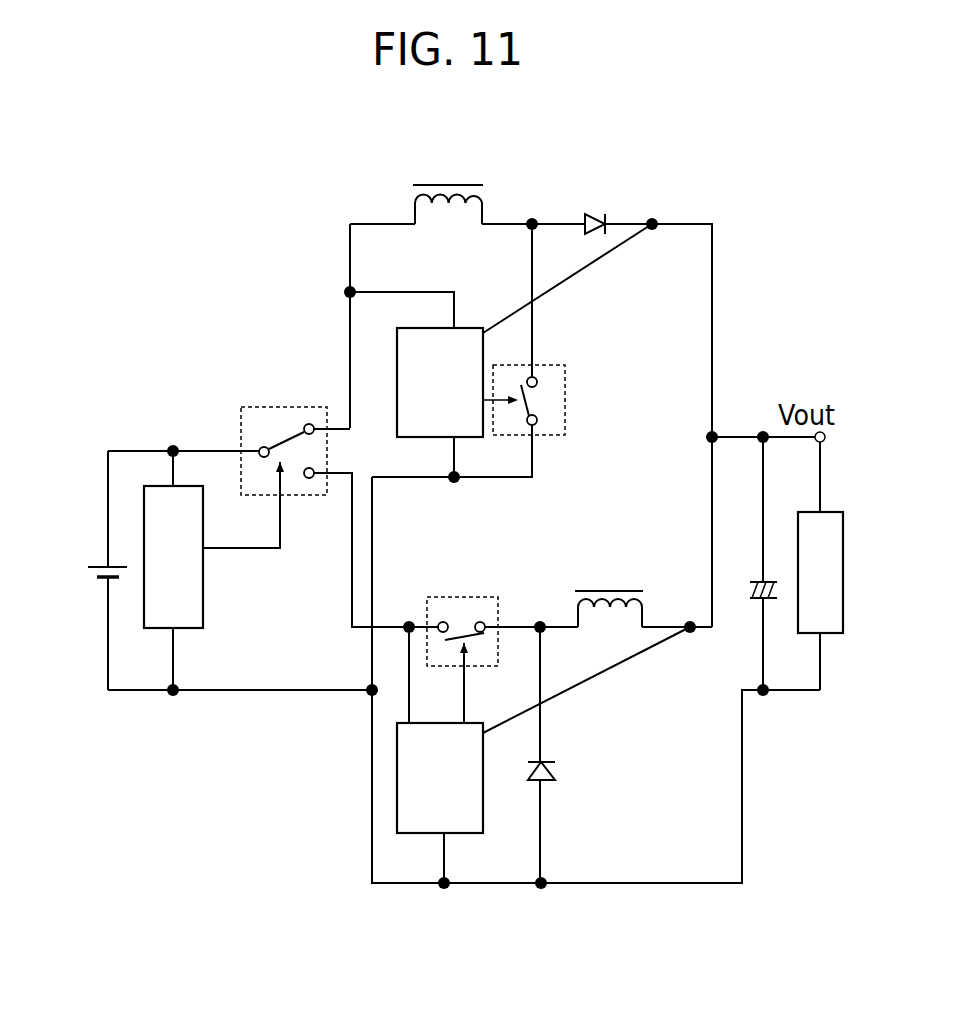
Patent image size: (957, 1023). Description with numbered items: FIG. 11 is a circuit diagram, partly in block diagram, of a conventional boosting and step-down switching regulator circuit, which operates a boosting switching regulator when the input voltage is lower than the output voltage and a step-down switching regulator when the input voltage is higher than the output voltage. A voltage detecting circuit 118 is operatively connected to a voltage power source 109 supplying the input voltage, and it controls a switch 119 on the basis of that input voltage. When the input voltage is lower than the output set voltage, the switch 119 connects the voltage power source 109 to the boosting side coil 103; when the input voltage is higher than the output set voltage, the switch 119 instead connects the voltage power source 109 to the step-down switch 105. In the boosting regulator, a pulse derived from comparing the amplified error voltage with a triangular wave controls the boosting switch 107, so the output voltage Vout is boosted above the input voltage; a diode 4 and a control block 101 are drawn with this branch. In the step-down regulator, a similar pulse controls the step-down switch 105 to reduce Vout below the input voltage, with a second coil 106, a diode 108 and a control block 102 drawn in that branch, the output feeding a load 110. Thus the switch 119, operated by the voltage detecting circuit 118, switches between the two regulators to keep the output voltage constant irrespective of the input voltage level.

The diode 4 is at (609, 217).
The first control circuit 101 is at (473, 437).
The second control circuit 102 is at (483, 813).
The boosting side coil 103 is at (482, 202).
The step-down switch 105 is at (492, 597).
The second inductor 106 is at (650, 603).
The boosting switch 107 is at (566, 368).
The diode 108 is at (553, 762).
The voltage power source 109 is at (102, 580).
The load 110 is at (832, 512).
The voltage detecting circuit 118 is at (153, 486).
The switch 119 is at (283, 407).